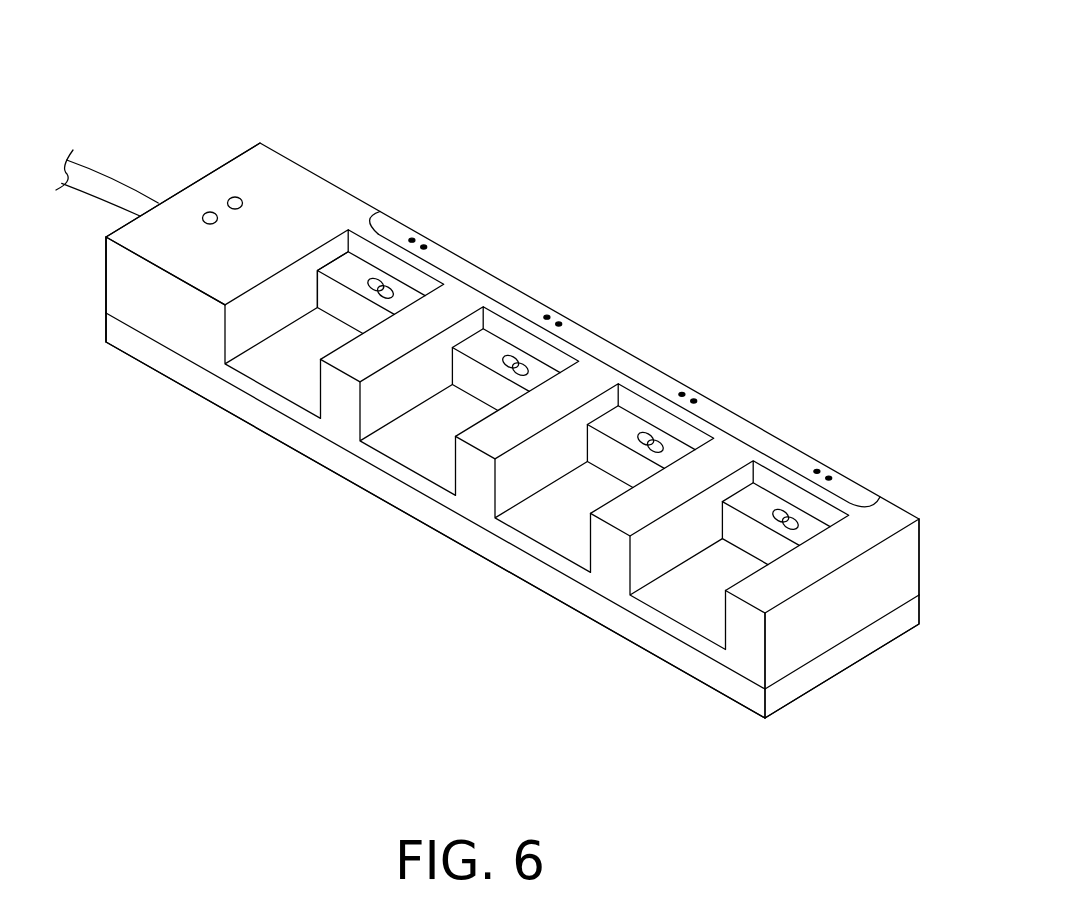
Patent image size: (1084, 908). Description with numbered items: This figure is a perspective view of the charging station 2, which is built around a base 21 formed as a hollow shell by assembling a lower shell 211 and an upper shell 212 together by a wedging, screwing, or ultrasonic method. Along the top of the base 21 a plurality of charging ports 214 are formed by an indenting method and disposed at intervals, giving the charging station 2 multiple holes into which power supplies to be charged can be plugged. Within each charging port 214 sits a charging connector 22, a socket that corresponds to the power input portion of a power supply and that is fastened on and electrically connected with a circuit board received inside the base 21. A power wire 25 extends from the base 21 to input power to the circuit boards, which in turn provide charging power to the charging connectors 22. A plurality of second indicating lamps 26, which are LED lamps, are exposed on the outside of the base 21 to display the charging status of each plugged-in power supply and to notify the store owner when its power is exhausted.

The charging station 2 is at (514, 428).
The base 21 is at (180, 324).
The lower shell 211 is at (455, 527).
The upper shell 212 is at (817, 626).
The charging port 214 is at (350, 270).
The charging connector 22 is at (388, 289).
The power wire 25 is at (105, 184).
The second indicating lamp 26 is at (562, 322).